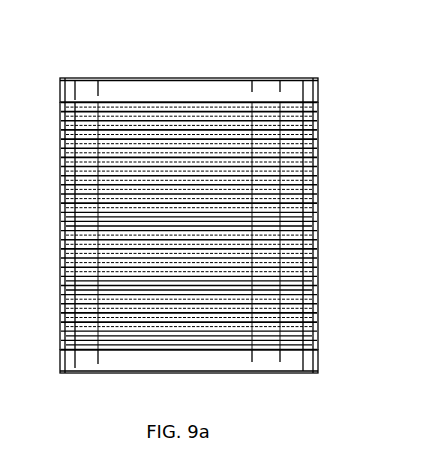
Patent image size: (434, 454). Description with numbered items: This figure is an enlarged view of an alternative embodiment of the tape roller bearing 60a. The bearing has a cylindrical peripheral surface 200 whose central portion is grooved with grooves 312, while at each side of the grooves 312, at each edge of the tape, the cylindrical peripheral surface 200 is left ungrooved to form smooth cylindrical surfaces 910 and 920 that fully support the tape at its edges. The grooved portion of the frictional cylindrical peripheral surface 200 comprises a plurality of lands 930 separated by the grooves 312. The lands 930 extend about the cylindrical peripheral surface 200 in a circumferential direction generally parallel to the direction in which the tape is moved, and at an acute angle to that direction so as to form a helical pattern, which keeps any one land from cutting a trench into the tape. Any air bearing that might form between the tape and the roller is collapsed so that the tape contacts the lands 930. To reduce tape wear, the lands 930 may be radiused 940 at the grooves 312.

The bearing 60a is at (190, 60).
The smooth cylindrical surface 920 is at (60, 80).
The smooth cylindrical surface 910 is at (60, 356).
The grooves 312 is at (319, 140).
The lands 930 is at (318, 228).
The cylindrical peripheral surface 200 is at (319, 285).
The radiused 940 is at (319, 337).